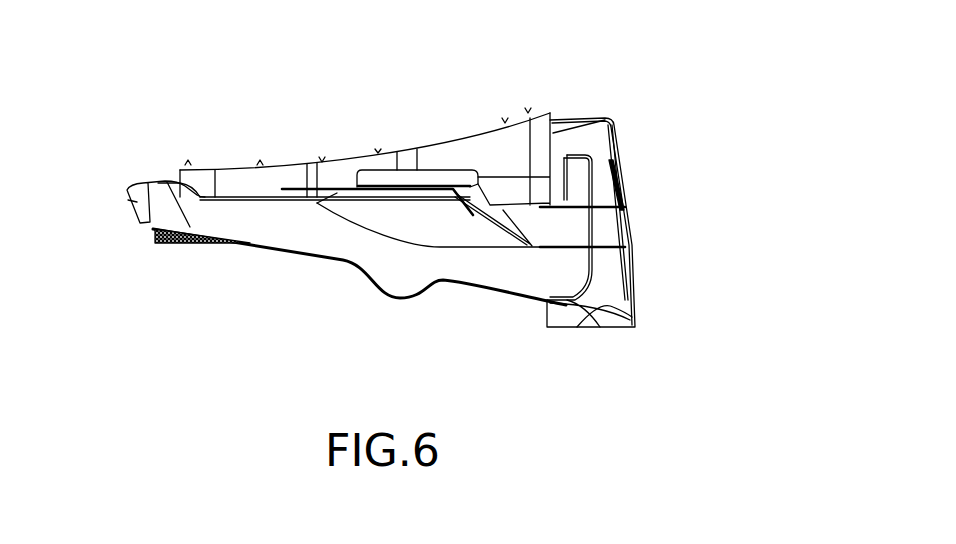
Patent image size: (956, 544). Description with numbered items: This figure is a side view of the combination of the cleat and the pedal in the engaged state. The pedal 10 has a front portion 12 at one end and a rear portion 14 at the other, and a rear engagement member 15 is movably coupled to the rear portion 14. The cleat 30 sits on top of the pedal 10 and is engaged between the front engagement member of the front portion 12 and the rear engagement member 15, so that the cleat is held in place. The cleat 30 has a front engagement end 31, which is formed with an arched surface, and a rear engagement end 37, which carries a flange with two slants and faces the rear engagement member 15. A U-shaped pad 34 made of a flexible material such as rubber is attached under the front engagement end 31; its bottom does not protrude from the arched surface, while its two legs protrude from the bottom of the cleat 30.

The pedal 10 is at (447, 252).
The front portion 12 is at (133, 205).
The rear portion 14 is at (547, 238).
The rear engagement member 15 is at (637, 228).
The cleat 30 is at (428, 146).
The front engagement end 31 is at (199, 168).
The U-shaped pad 34 is at (172, 247).
The rear engagement end 37 is at (553, 171).